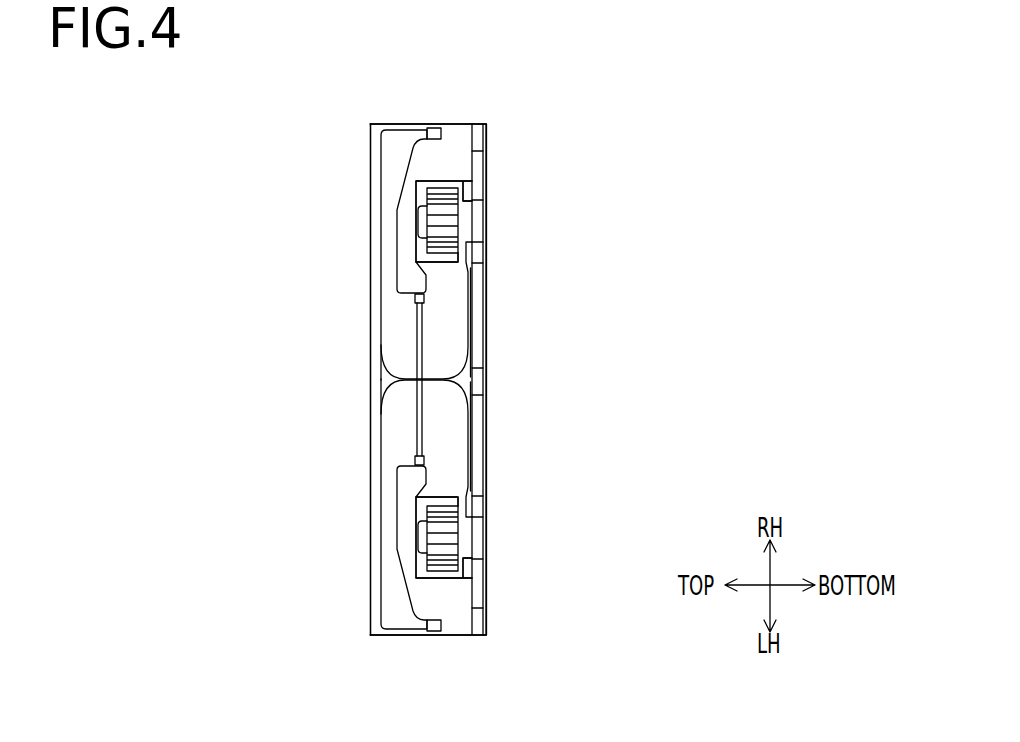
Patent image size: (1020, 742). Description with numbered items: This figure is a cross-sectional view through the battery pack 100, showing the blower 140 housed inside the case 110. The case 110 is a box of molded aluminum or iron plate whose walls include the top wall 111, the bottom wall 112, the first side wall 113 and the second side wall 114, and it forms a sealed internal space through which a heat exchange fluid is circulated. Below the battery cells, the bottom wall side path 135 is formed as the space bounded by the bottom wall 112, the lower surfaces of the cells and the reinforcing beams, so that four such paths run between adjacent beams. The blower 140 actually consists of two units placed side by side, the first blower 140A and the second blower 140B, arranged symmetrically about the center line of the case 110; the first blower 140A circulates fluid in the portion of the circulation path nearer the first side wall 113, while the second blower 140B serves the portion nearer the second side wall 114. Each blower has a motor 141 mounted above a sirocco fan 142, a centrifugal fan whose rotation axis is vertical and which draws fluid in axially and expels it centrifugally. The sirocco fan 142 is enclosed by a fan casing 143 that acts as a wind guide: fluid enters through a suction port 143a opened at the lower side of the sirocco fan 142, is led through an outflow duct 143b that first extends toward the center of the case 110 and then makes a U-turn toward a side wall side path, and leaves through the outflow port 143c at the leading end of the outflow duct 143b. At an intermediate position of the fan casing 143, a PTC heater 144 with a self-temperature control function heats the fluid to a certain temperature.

The battery pack 100 is at (366, 113).
The case 110 is at (395, 123).
The top wall 111 is at (370, 308).
The bottom wall 112 is at (485, 308).
The first side wall 113 is at (387, 637).
The second side wall 114 is at (433, 123).
The bottom wall side path 135 is at (477, 190).
The blower 140 is at (518, 367).
The first blower 140A is at (441, 586).
The second blower 140B is at (449, 179).
The motor 141 is at (437, 221).
The sirocco fan 142 is at (422, 226).
The fan casing 143 is at (380, 338).
The suction port 143a is at (464, 220).
The outflow duct 143b is at (380, 163).
The outflow port 143c is at (438, 122).
The PTC heater 144 is at (416, 350).